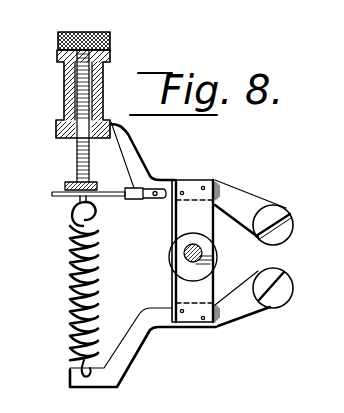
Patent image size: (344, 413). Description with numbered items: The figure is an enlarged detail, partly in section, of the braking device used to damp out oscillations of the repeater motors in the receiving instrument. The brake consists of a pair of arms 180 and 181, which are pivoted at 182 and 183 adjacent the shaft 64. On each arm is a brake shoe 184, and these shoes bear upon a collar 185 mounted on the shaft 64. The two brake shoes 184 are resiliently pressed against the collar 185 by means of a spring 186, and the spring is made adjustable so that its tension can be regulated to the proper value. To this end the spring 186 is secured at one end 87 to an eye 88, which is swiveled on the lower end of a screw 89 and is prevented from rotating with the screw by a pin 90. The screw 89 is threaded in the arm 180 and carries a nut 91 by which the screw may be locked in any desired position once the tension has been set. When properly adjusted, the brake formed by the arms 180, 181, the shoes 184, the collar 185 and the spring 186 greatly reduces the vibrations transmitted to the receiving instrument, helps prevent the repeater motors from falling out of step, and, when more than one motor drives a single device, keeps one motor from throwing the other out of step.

The nut 91 is at (72, 110).
The arm 180 is at (147, 145).
The screw 89 is at (100, 172).
The pin 90 is at (103, 197).
The eye 88 is at (80, 198).
The end of spring 87 is at (76, 212).
The spring 186 is at (72, 312).
The brake shoe 184 is at (195, 251).
The shaft 64 is at (215, 256).
The collar 185 is at (176, 262).
The pivot 182 is at (290, 226).
The pivot 183 is at (291, 290).
The arm 181 is at (140, 346).